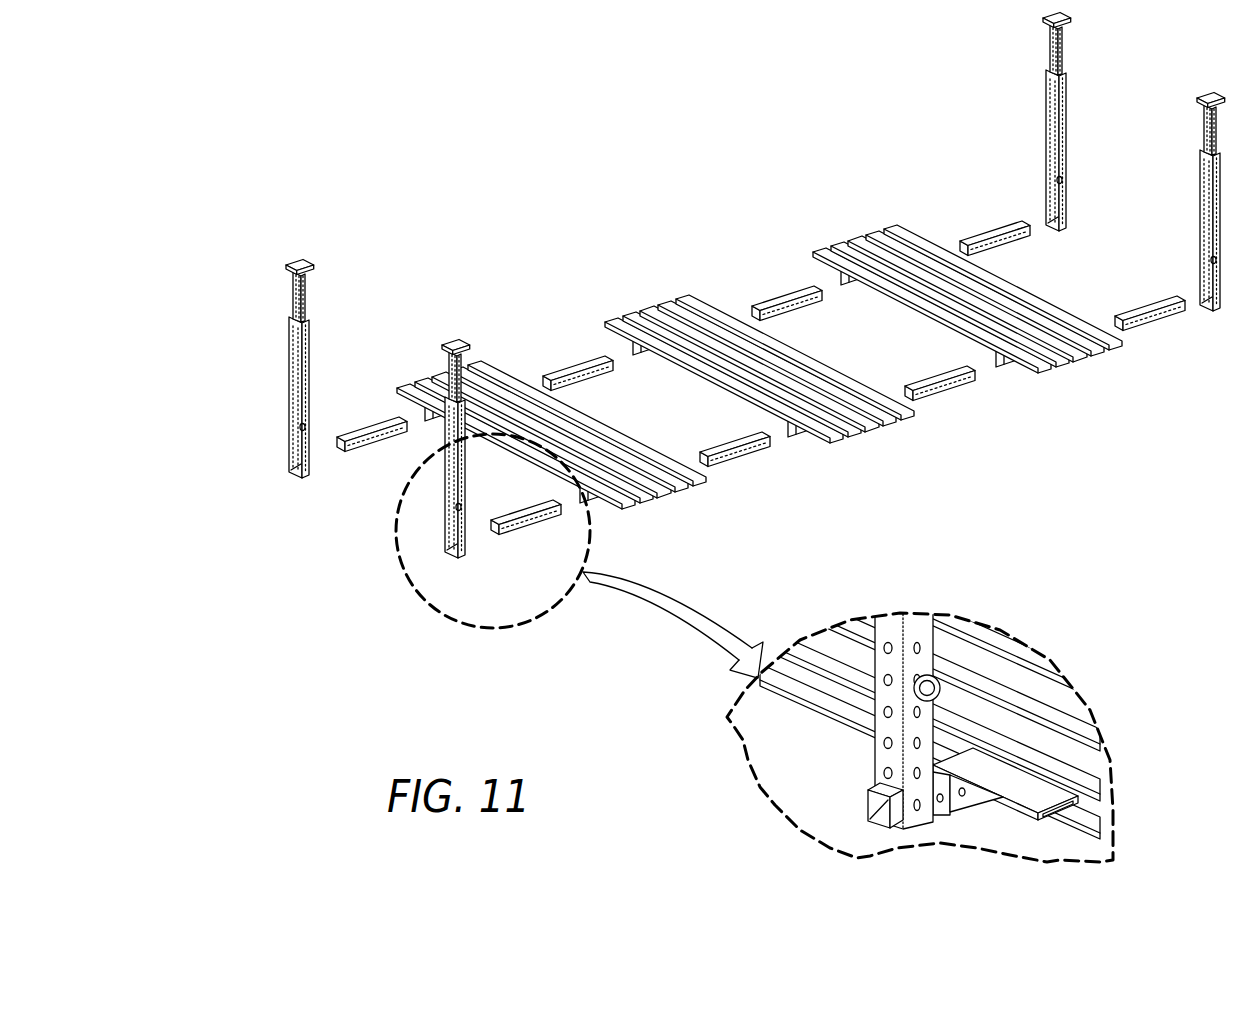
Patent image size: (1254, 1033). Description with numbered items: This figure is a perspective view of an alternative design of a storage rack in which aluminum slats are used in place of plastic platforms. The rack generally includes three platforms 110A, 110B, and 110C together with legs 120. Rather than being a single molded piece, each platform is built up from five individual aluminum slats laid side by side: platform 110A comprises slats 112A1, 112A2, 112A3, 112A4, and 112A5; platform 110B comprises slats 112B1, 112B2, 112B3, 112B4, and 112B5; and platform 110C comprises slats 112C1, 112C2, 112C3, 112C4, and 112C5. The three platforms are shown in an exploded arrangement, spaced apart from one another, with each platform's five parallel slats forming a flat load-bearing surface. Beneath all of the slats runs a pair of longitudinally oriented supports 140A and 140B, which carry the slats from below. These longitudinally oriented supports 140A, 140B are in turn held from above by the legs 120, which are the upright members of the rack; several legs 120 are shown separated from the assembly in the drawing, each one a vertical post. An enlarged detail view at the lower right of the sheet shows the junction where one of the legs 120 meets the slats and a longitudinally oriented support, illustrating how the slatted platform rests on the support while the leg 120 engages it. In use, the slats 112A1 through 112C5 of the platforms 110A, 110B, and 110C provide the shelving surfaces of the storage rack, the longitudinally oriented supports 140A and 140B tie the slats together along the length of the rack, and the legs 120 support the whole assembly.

The platform 110A is at (576, 458).
The platform 110B is at (785, 391).
The platform 110C is at (992, 323).
The slat 112A1 is at (629, 507).
The slat 112A2 is at (646, 501).
The slat 112A3 is at (664, 496).
The slat 112A4 is at (682, 490).
The slat 112A5 is at (699, 484).
The slat 112B1 is at (837, 441).
The slat 112B2 is at (854, 435).
The slat 112B3 is at (872, 430).
The slat 112B4 is at (890, 424).
The slat 112B5 is at (907, 418).
The slat 112C1 is at (1045, 371).
The slat 112C2 is at (1062, 365).
The slat 112C3 is at (1080, 360).
The slat 112C4 is at (1098, 354).
The slat 112C5 is at (1115, 348).
The legs 120 is at (1048, 44).
The longitudinally oriented support 140A is at (652, 352).
The longitudinally oriented support 140B is at (790, 425).